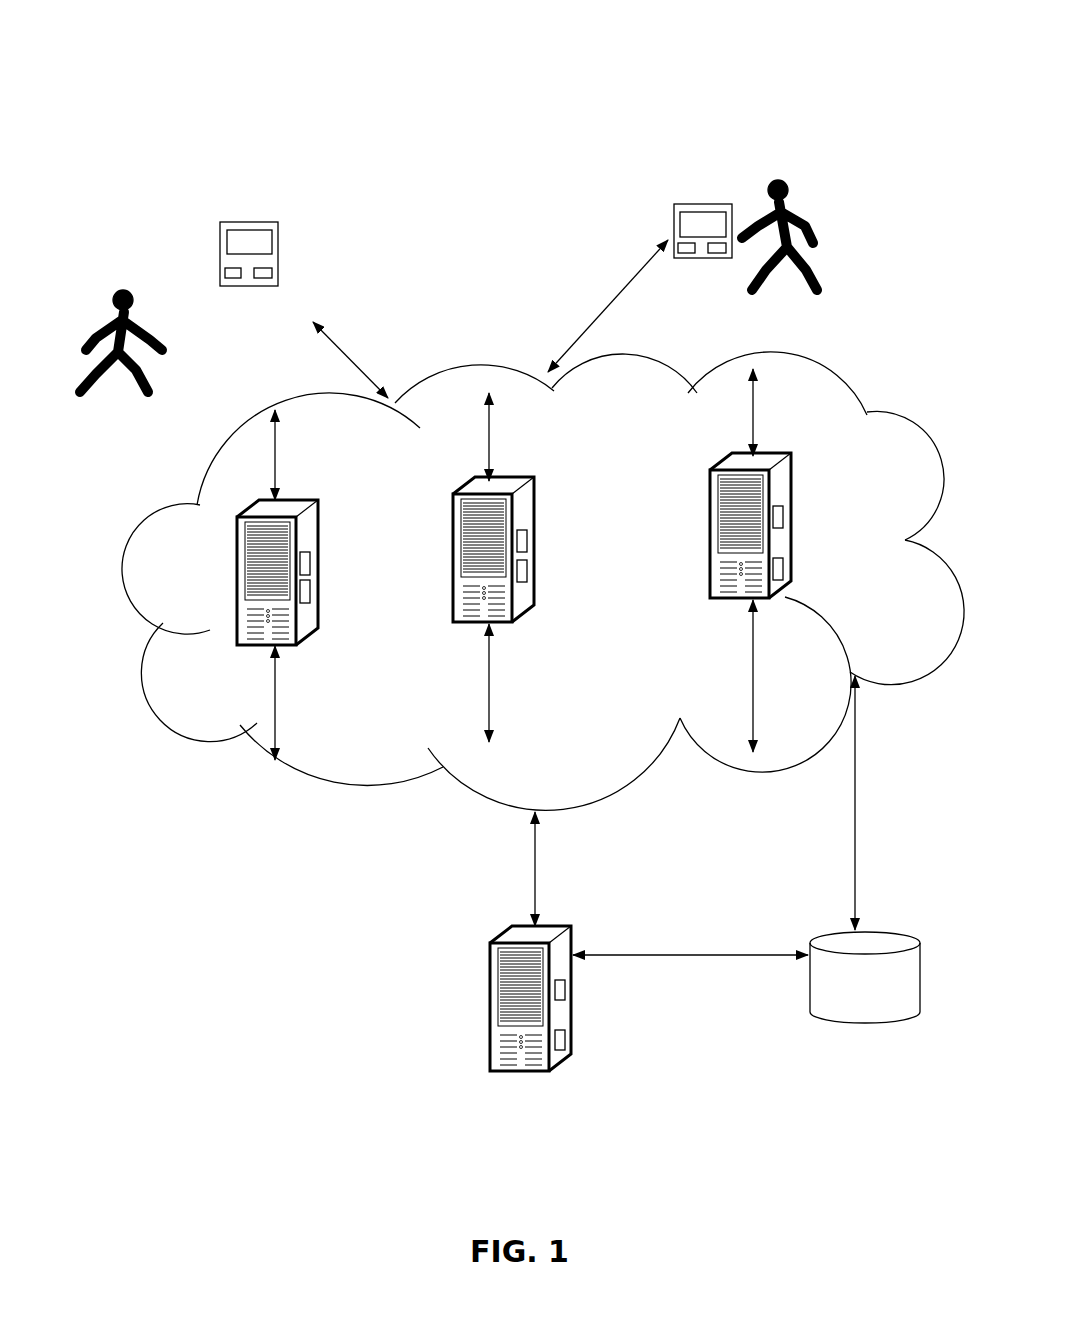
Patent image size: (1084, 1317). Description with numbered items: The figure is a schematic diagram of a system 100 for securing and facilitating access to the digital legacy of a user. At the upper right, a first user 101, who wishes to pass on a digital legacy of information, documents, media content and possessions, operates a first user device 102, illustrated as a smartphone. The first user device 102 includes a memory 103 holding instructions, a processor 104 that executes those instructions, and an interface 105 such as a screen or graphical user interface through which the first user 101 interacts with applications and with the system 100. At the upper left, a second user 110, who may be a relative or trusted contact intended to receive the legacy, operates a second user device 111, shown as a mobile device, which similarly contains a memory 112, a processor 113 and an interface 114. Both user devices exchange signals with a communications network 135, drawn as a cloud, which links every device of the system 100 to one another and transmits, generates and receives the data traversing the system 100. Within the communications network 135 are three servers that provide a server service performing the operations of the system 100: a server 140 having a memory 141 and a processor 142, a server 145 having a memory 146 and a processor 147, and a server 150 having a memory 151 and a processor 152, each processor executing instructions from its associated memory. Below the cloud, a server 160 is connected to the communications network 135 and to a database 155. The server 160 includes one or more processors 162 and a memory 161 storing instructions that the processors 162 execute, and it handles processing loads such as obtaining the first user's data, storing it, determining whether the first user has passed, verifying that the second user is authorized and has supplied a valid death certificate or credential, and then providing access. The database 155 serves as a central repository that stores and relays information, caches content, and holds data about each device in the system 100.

The system 100 is at (204, 115).
The first user 101 is at (817, 290).
The first user device 102 is at (674, 228).
The memory 103 is at (686, 258).
The processor 104 is at (717, 258).
The interface 105 is at (703, 212).
The second user 110 is at (110, 378).
The second user device 111 is at (278, 255).
The memory 112 is at (232, 286).
The processor 113 is at (262, 286).
The interface 114 is at (247, 222).
The communications network 135 is at (128, 548).
The server 140 is at (237, 543).
The memory 141 is at (310, 563).
The processor 142 is at (310, 592).
The server 145 is at (453, 521).
The memory 146 is at (527, 540).
The processor 147 is at (527, 572).
The server 150 is at (710, 463).
The memory 151 is at (783, 517).
The processor 152 is at (783, 568).
The database 155 is at (865, 977).
The server 160 is at (490, 1045).
The memory 161 is at (565, 1040).
The processors 162 is at (565, 990).